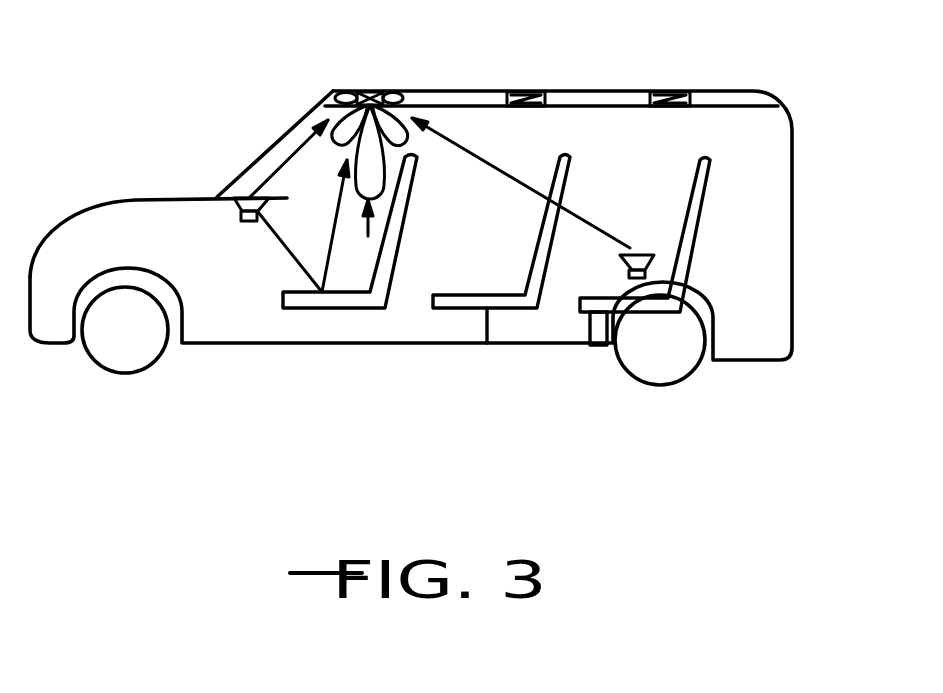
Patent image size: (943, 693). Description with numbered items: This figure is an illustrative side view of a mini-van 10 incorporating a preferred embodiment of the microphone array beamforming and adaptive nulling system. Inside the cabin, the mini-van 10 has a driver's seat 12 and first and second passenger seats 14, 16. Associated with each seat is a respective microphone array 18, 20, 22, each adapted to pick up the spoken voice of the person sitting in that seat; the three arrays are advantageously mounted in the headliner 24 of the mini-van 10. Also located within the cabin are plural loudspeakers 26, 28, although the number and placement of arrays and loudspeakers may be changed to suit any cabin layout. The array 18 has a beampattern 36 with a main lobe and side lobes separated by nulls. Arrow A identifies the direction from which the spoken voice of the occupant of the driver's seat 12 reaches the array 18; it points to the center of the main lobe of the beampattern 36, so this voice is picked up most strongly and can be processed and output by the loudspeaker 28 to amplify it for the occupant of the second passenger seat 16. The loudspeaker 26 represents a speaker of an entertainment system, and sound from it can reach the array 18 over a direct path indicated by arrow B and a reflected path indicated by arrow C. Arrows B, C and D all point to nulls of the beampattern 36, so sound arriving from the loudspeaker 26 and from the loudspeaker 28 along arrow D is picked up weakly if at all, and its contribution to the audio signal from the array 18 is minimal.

The mini-van 10 is at (113, 208).
The driver's seat 12 is at (343, 309).
The first passenger seat 14 is at (487, 343).
The second passenger seat 16 is at (582, 345).
The microphone array 18 is at (358, 103).
The microphone array 20 is at (513, 91).
The microphone array 22 is at (663, 91).
The headliner 24 is at (730, 105).
The loudspeaker 26 is at (234, 204).
The loudspeaker 28 is at (647, 272).
The beampattern 36 is at (347, 91).
The arrow A is at (368, 236).
The arrow B is at (280, 162).
The arrow C is at (335, 220).
The arrow D is at (585, 207).